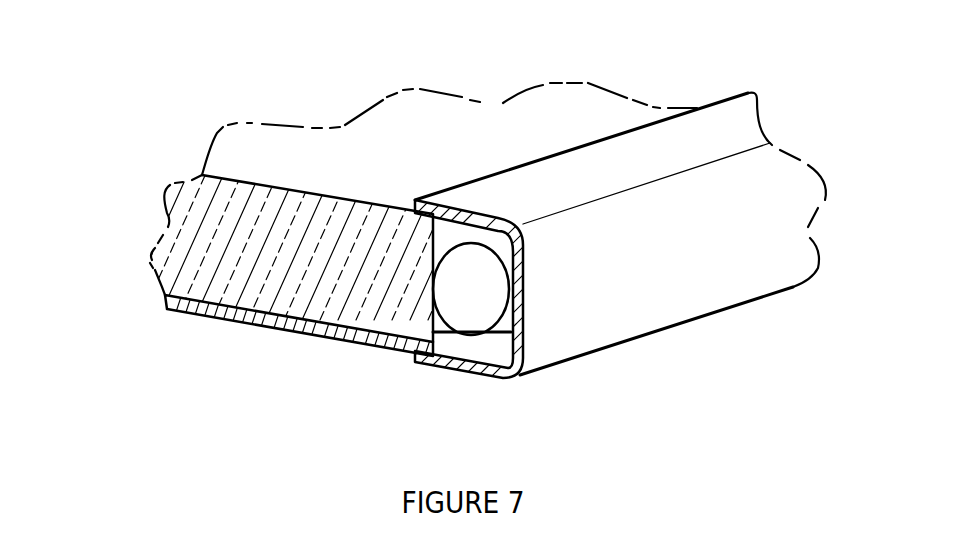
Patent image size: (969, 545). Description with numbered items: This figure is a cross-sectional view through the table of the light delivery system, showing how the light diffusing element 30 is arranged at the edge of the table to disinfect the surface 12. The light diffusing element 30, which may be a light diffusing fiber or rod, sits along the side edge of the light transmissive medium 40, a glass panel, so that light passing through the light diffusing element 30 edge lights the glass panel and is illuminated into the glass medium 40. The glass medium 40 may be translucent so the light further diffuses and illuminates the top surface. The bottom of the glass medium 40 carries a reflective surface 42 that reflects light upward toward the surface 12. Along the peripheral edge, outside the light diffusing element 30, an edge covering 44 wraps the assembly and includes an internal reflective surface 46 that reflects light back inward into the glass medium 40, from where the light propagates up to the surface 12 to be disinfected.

The surface 12 is at (572, 113).
The light diffusing element 30 is at (483, 313).
The light transmissive medium 40 is at (278, 265).
The reflective surface 42 is at (322, 335).
The edge covering 44 is at (667, 277).
The internal reflective surface 46 is at (503, 378).